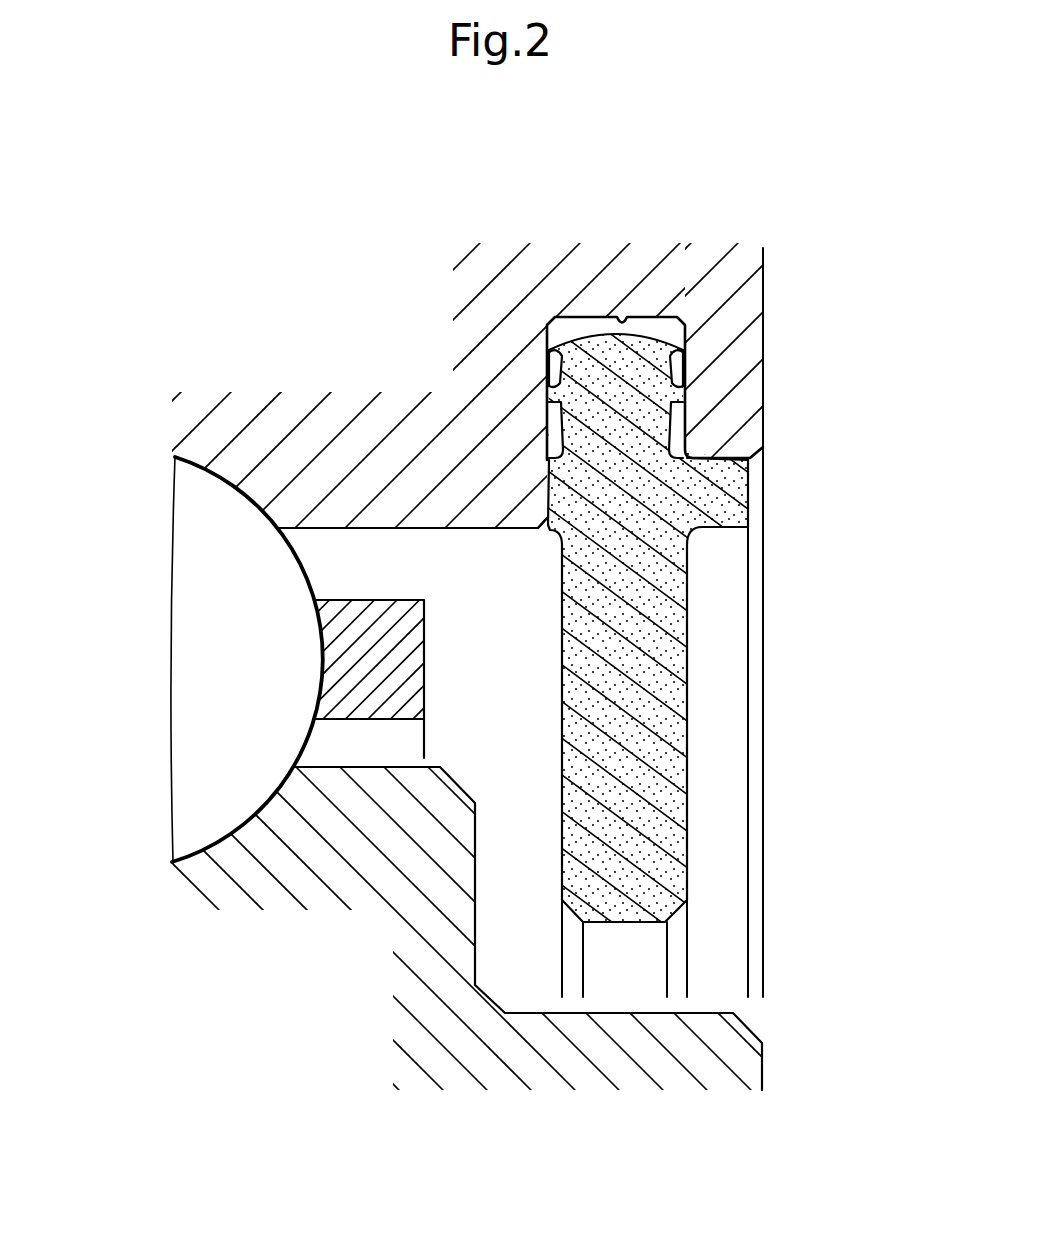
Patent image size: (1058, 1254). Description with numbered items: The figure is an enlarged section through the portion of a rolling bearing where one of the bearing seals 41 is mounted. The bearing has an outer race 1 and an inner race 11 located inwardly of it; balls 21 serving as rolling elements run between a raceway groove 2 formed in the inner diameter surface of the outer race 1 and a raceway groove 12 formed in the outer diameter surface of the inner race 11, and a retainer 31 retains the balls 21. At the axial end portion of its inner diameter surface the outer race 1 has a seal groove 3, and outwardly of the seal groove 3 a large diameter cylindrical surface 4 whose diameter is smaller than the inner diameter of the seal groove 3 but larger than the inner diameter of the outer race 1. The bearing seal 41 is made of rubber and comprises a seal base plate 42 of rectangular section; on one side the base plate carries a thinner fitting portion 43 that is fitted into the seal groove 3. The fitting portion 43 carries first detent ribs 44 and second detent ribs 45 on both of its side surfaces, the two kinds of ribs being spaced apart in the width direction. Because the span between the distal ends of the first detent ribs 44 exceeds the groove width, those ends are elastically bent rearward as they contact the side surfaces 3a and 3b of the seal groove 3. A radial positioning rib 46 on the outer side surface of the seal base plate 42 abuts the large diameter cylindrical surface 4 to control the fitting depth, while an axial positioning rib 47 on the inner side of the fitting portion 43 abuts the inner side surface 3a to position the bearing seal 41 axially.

The outer race 1 is at (305, 402).
The raceway groove 2 is at (197, 621).
The seal groove 3 is at (624, 318).
The inner side surface of the seal groove 3a is at (553, 444).
The side surface of the seal groove 3b is at (687, 371).
The large diameter cylindrical surface 4 is at (740, 475).
The inner race 11 is at (285, 895).
The raceway groove 12 is at (210, 836).
The ball 21 is at (195, 607).
The retainer 31 is at (352, 665).
The bearing seal 41 is at (626, 617).
The seal base plate 42 is at (668, 677).
The fitting portion 43 is at (600, 362).
The first detent rib 44 is at (545, 340).
The second detent rib 45 is at (549, 378).
The radial positioning rib 46 is at (742, 506).
The axial positioning rib 47 is at (543, 502).